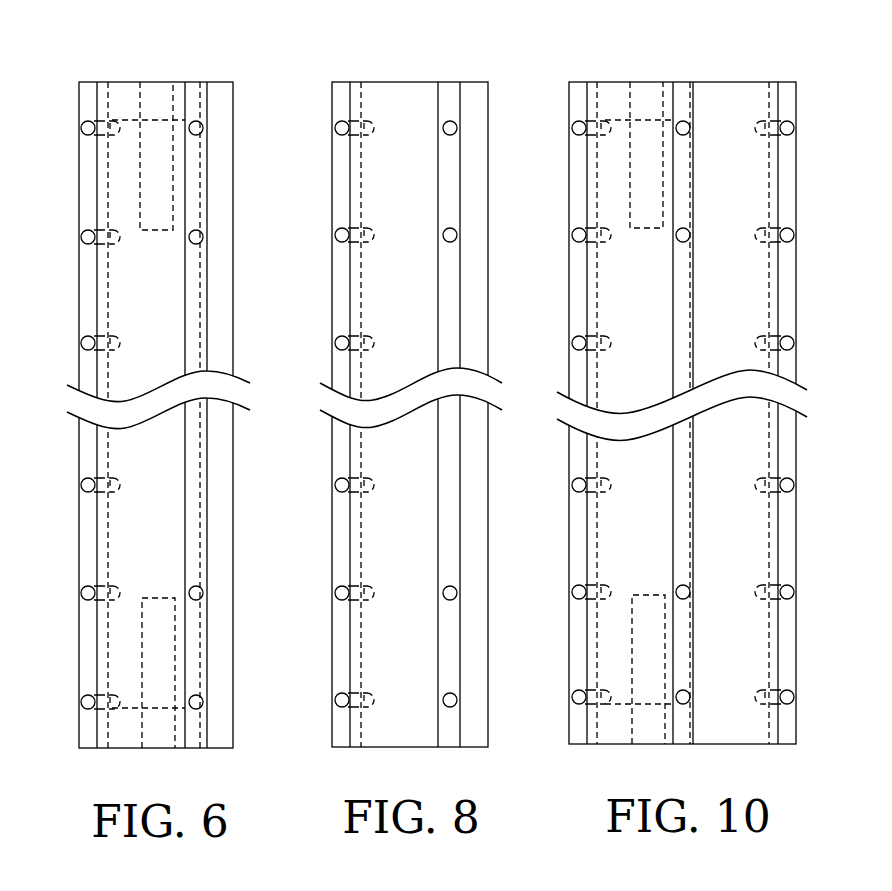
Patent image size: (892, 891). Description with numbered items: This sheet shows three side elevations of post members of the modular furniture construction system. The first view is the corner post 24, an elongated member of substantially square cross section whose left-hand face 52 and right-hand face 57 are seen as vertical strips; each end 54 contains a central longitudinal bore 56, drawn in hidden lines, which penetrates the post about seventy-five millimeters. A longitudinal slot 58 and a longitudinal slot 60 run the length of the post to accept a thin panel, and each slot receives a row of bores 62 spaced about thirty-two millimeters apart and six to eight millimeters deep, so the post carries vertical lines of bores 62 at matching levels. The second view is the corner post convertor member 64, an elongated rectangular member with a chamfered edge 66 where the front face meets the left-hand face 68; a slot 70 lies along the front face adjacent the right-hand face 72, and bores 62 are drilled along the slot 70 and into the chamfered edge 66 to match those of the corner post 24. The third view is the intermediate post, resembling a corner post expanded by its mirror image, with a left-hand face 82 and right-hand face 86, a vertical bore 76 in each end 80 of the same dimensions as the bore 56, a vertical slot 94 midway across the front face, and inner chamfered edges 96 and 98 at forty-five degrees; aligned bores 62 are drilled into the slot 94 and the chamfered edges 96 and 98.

In FIG. 6, the corner post 24 is at (212, 82).
In FIG. 6, the left-hand face 52 is at (79, 308).
In FIG. 6, the end 54 is at (84, 82).
In FIG. 6, the central longitudinal bore 56 is at (172, 97).
In FIG. 6, the right-hand face 57 is at (233, 325).
In FIG. 6, the longitudinal slot 58 is at (208, 182).
In FIG. 6, the longitudinal slot 60 is at (104, 170).
In FIG. 6, the bores 62 is at (88, 233).
In FIG. 8, the bores 62 is at (458, 128).
In FIG. 10, the bores 62 is at (794, 128).
In FIG. 8, the corner post convertor member 64 is at (338, 82).
In FIG. 8, the chamfered edge 66 is at (360, 82).
In FIG. 8, the left-hand face 68 is at (332, 112).
In FIG. 8, the slot 70 is at (460, 82).
In FIG. 8, the right-hand face 72 is at (488, 200).
In FIG. 10, the vertical bore 76 is at (597, 82).
In FIG. 10, the end 80 is at (725, 82).
In FIG. 10, the left-hand face 82 is at (569, 297).
In FIG. 10, the right-hand face 86 is at (796, 290).
In FIG. 10, the vertical slot 94 is at (680, 82).
In FIG. 10, the chamfered edge 96 is at (783, 82).
In FIG. 10, the chamfered edge 98 is at (569, 108).